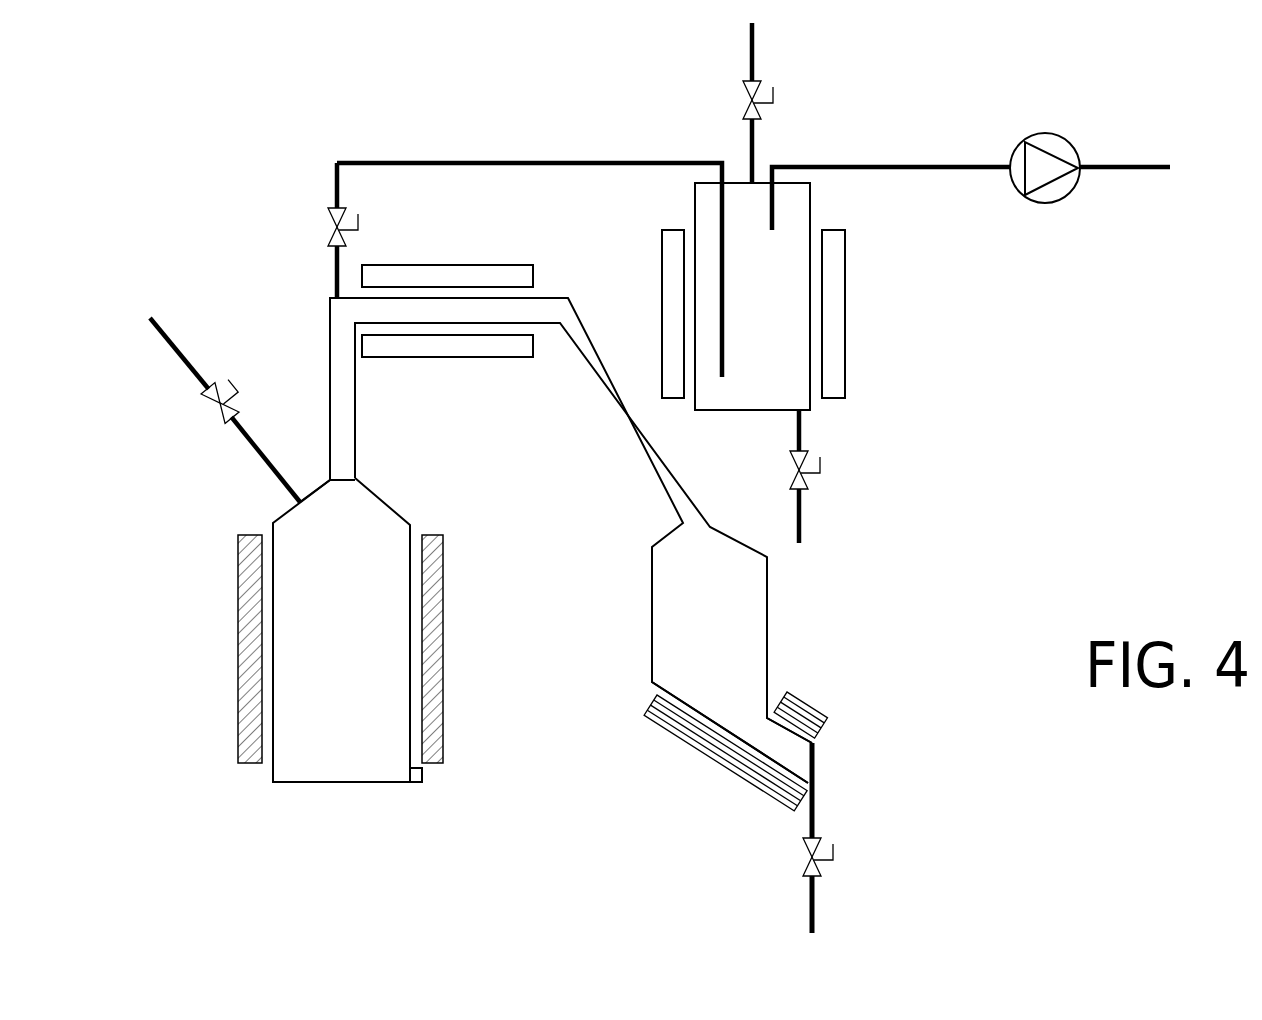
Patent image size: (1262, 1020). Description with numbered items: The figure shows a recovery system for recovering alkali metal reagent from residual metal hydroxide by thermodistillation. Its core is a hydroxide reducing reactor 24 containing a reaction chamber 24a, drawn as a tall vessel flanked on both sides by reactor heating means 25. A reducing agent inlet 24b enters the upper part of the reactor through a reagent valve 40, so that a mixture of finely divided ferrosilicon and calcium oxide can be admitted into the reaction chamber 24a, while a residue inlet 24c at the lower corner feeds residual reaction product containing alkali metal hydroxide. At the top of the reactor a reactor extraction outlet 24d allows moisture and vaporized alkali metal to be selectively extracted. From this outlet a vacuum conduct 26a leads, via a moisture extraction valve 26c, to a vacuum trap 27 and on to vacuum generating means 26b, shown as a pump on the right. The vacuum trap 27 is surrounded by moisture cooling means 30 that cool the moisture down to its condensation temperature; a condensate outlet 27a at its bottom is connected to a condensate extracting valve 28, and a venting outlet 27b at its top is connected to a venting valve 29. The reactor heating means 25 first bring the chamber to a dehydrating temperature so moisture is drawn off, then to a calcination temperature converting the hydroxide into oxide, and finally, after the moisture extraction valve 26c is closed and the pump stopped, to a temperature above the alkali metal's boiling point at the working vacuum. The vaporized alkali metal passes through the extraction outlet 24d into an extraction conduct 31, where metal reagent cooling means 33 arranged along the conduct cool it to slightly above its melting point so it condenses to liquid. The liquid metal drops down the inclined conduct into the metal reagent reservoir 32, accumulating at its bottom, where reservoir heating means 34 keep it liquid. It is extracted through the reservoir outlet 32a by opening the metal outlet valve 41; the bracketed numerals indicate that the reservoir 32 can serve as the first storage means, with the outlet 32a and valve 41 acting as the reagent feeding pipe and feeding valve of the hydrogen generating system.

The hydroxide reducing reactor 24 is at (400, 505).
The reaction chamber 24a is at (315, 665).
The reducing agent inlet 24b is at (317, 483).
The residue inlet 24c is at (417, 784).
The reactor extraction outlet 24d is at (340, 475).
The reactor heating means 25 is at (240, 627).
The vacuum conduct 26a is at (453, 163).
The vacuum generating means 26b is at (1078, 147).
The moisture extraction valve 26c is at (327, 230).
The vacuum trap 27 is at (822, 212).
The condensate outlet 27a is at (802, 435).
The venting outlet 27b is at (755, 145).
The condensate extracting valve 28 is at (808, 480).
The venting valve 29 is at (748, 98).
The moisture cooling means 30 is at (665, 302).
The extraction conduct 31 is at (402, 307).
The metal reagent reservoir 32 is at (776, 607).
The reservoir outlet 32a is at (817, 765).
The metal reagent cooling means 33 is at (498, 270).
The reservoir heating means 34 is at (820, 707).
The reagent valve 40 is at (227, 402).
The metal outlet valve 41 is at (820, 867).